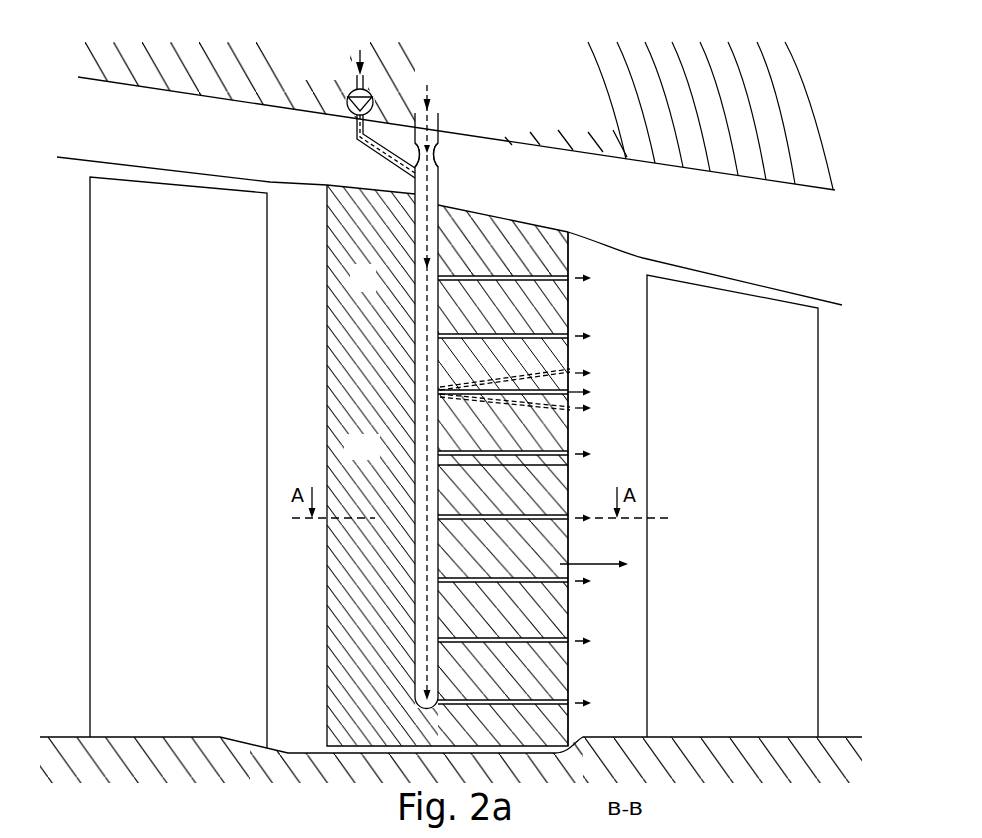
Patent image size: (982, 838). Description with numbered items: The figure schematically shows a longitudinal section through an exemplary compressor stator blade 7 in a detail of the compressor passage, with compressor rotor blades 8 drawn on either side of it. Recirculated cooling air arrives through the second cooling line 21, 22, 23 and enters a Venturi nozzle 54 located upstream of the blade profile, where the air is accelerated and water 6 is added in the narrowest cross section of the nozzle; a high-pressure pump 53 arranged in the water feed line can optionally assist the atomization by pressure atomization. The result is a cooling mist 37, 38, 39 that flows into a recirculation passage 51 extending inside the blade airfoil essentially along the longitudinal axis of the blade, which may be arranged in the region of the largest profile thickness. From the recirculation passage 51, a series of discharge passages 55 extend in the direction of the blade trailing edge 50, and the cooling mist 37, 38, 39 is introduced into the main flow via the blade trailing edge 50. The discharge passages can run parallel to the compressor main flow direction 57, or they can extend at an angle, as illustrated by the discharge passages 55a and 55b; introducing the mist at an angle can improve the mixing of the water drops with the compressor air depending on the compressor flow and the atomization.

The water 6 is at (363, 52).
The compressor stator blade 7 is at (369, 290).
The compressor rotor blade 8 is at (189, 455).
The second cooling line 21 is at (437, 88).
The second cooling line 22 is at (322, 88).
The second cooling line 23 is at (669, 115).
The cooling mist 37 is at (445, 236).
The cooling mist 38 is at (503, 470).
The cooling mist 39 is at (566, 472).
The blade trailing edge 50 is at (577, 495).
The recirculation passage 51 is at (414, 421).
The high-pressure pump 53 is at (349, 91).
The Venturi nozzle 54 is at (438, 158).
The discharge passage 55 is at (455, 450).
The discharge passage 55a is at (586, 370).
The discharge passage 55b is at (592, 412).
The compressor main flow direction 57 is at (607, 568).